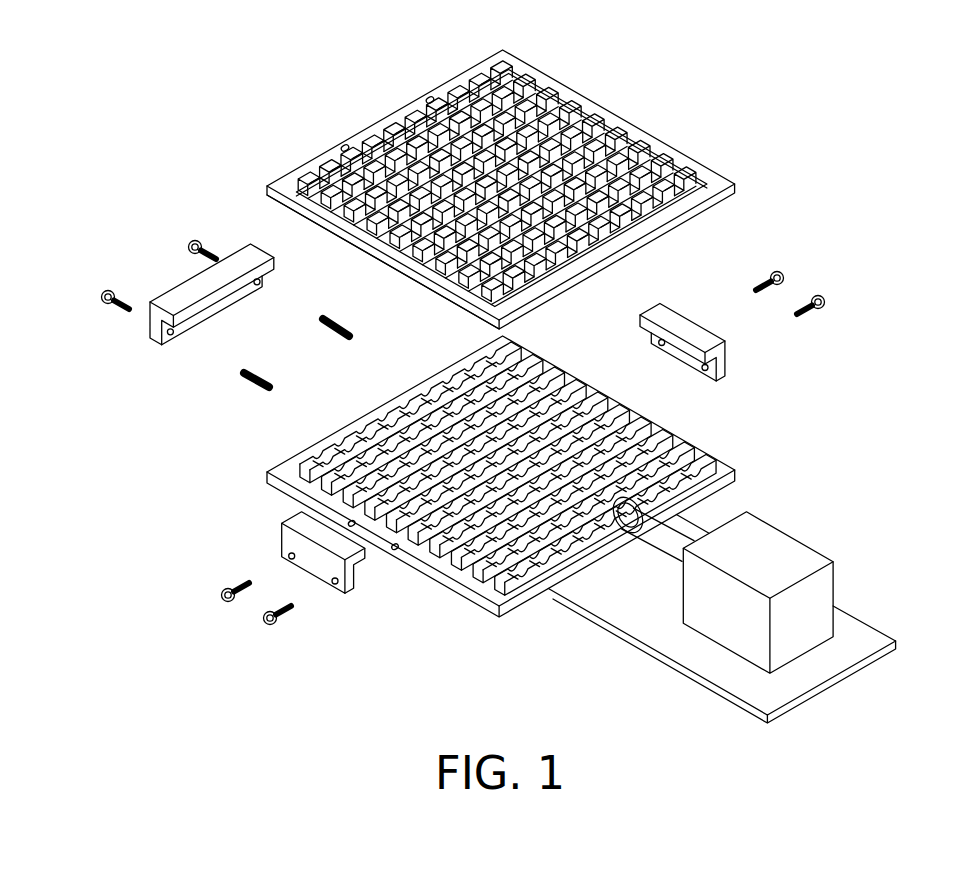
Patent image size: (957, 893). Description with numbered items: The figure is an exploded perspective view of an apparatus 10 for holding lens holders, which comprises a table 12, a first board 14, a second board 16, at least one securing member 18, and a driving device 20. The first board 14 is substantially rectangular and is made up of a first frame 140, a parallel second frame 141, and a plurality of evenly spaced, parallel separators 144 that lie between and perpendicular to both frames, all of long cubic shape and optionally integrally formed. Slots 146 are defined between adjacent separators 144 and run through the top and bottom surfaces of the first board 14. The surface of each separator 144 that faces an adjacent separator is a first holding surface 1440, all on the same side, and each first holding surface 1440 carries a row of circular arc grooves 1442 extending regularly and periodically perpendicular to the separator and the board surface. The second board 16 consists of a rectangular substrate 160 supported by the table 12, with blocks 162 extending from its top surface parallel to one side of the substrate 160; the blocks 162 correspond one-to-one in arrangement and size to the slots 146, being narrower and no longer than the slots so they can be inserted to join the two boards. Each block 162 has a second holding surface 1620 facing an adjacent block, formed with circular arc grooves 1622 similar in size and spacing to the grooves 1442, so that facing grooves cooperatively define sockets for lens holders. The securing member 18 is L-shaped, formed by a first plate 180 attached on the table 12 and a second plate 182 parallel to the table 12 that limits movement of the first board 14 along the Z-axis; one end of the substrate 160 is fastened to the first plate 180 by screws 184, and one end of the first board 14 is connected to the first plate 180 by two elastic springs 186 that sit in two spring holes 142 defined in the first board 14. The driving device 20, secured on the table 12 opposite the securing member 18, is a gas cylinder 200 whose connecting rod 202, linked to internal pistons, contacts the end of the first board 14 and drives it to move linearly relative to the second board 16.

The apparatus 10 is at (256, 52).
The table 12 is at (878, 654).
The first board 14 is at (633, 112).
The first frame 140 is at (565, 92).
The second frame 141 is at (350, 228).
The spring holes 142 is at (430, 97).
The separators 144 is at (484, 100).
The first holding surface 1440 is at (690, 201).
The grooves 1442 is at (672, 203).
The slots 146 is at (707, 184).
The second board 16 is at (746, 469).
The substrate 160 is at (283, 466).
The blocks 162 is at (713, 452).
The second holding surface 1620 is at (686, 435).
The grooves 1622 is at (674, 468).
The securing member 18 is at (185, 264).
The first plate 180 is at (152, 328).
The second plate 182 is at (256, 250).
The screws 184 is at (108, 290).
The elastic springs 186 is at (244, 381).
The driving device 20 is at (848, 544).
The gas cylinder 200 is at (825, 605).
The connecting rod 202 is at (668, 532).